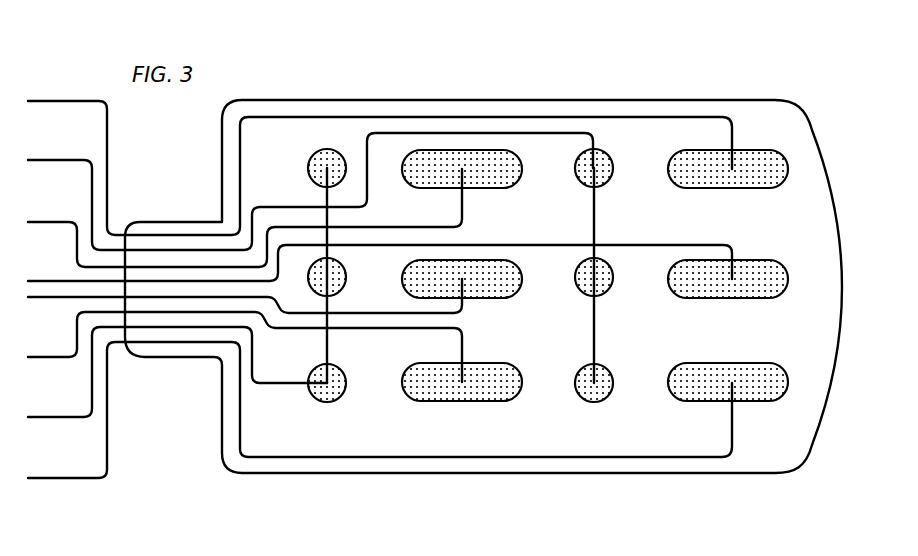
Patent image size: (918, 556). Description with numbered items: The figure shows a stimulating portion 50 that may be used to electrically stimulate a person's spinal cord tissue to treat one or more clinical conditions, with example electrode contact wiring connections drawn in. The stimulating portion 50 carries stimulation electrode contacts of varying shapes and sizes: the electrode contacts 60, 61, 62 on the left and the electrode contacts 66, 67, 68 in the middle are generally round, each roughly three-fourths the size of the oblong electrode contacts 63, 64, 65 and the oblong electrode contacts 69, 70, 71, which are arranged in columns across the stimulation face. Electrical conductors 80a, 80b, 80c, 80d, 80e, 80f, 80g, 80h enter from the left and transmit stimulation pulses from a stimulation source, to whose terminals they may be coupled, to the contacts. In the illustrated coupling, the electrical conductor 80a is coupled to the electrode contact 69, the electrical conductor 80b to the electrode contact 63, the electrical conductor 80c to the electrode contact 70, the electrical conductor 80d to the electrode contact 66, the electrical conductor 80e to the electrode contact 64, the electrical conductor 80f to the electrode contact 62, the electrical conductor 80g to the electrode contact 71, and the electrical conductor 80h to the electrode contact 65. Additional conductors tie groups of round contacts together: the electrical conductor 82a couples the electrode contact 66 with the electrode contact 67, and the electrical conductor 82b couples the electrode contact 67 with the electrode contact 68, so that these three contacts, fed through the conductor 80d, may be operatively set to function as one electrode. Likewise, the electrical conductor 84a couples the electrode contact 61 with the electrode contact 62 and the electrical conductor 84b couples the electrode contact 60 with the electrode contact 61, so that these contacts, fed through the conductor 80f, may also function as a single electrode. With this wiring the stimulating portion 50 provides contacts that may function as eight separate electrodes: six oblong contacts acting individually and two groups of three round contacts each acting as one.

The stimulating portion 50 is at (606, 54).
The electrode contact 60 is at (310, 156).
The electrode contact 61 is at (347, 278).
The electrode contact 62 is at (336, 402).
The electrode contact 63 is at (490, 190).
The electrode contact 64 is at (497, 300).
The electrode contact 65 is at (484, 402).
The electrode contact 66 is at (617, 165).
The electrode contact 67 is at (613, 286).
The electrode contact 68 is at (606, 400).
The electrode contact 69 is at (750, 190).
The electrode contact 70 is at (747, 302).
The electrode contact 71 is at (757, 403).
The electrical conductor 80a is at (69, 99).
The electrical conductor 80b is at (63, 220).
The electrical conductor 80c is at (50, 279).
The electrical conductor 80d is at (63, 158).
The electrical conductor 80e is at (59, 299).
The electrical conductor 80f is at (64, 419).
The electrical conductor 80g is at (66, 480).
The electrical conductor 80h is at (63, 359).
The electrical conductor 82a is at (598, 205).
The electrical conductor 82b is at (598, 345).
The electrical conductor 84a is at (330, 348).
The electrical conductor 84b is at (322, 198).